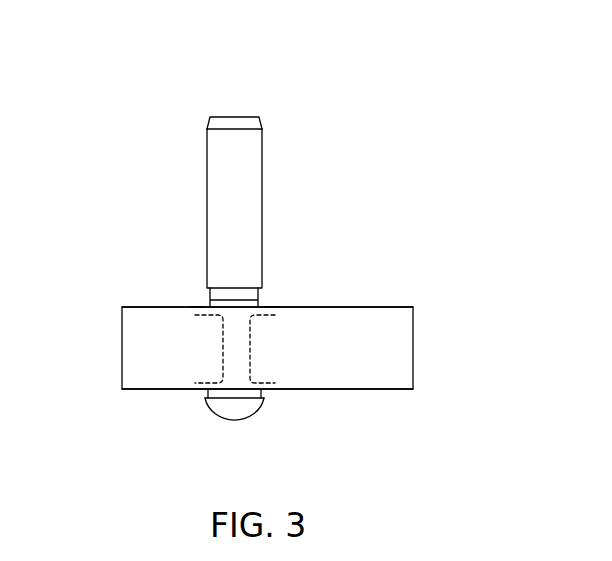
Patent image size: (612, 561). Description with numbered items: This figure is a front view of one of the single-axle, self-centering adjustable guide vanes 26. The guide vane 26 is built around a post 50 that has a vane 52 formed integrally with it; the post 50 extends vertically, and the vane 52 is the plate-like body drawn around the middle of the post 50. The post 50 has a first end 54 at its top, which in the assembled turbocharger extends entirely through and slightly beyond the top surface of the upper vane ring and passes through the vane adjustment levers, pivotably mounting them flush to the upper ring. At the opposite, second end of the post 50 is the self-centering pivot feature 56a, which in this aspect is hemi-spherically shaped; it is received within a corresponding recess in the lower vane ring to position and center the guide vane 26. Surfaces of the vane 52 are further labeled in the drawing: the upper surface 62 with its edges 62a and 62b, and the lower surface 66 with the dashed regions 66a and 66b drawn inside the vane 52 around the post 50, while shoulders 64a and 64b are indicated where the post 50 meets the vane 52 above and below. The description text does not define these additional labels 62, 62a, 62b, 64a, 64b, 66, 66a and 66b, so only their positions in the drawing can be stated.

The guide vane 26 is at (310, 147).
The post 50 is at (263, 200).
The vane 52 is at (400, 345).
The first end 54 is at (247, 117).
The self-centering pivot feature 56a is at (215, 420).
The plate top surface 62 is at (367, 307).
The first top surface edge 62a is at (195, 306).
The second top surface edge 62b is at (275, 307).
The first pin shoulder 64a is at (207, 302).
The second pin shoulder 64b is at (262, 393).
The plate bottom surface 66 is at (355, 390).
The first groove 66a is at (197, 383).
The second groove 66b is at (272, 386).